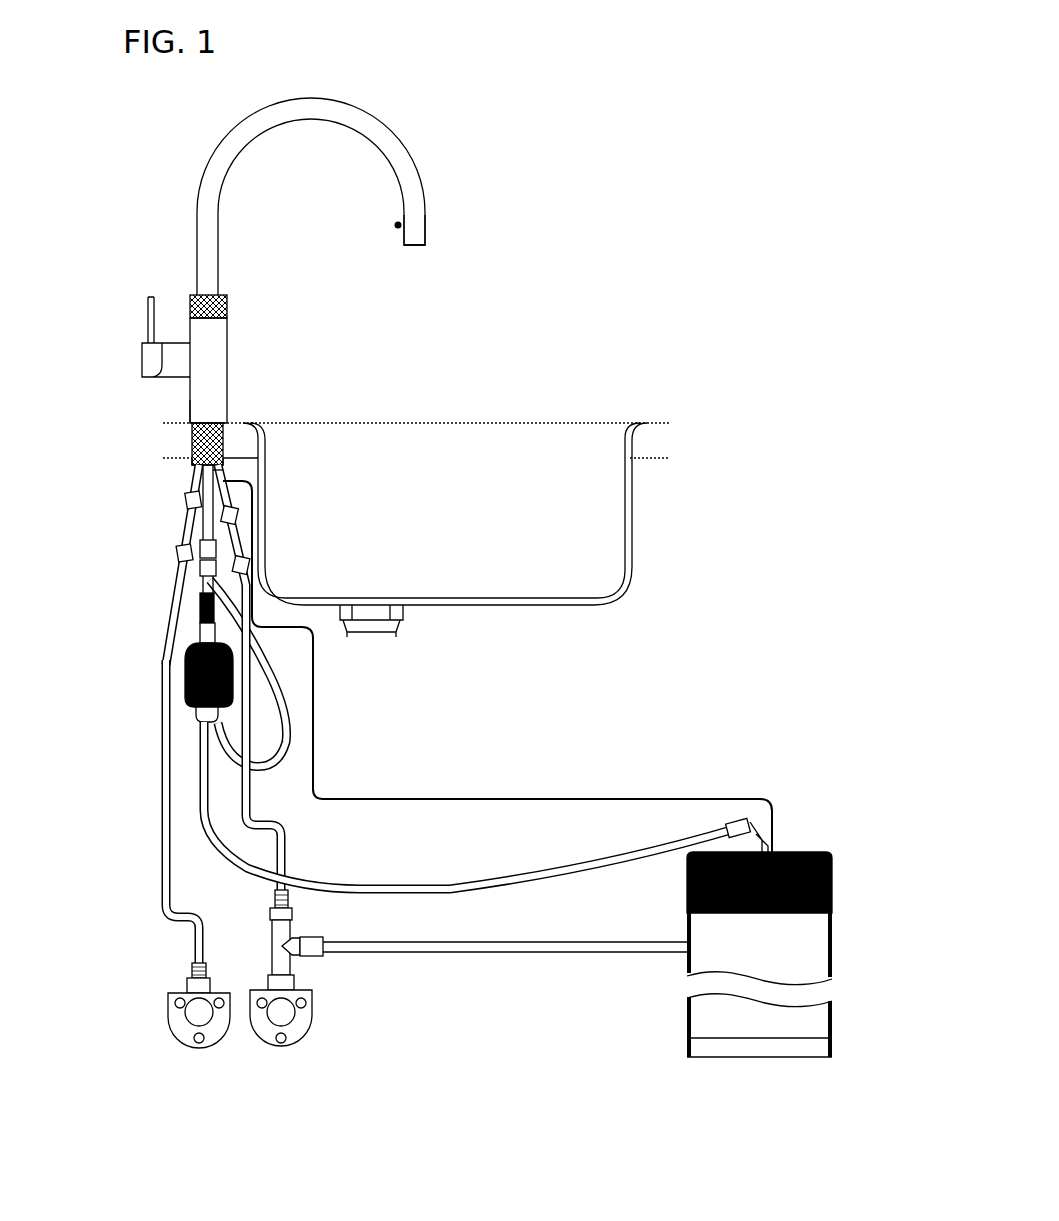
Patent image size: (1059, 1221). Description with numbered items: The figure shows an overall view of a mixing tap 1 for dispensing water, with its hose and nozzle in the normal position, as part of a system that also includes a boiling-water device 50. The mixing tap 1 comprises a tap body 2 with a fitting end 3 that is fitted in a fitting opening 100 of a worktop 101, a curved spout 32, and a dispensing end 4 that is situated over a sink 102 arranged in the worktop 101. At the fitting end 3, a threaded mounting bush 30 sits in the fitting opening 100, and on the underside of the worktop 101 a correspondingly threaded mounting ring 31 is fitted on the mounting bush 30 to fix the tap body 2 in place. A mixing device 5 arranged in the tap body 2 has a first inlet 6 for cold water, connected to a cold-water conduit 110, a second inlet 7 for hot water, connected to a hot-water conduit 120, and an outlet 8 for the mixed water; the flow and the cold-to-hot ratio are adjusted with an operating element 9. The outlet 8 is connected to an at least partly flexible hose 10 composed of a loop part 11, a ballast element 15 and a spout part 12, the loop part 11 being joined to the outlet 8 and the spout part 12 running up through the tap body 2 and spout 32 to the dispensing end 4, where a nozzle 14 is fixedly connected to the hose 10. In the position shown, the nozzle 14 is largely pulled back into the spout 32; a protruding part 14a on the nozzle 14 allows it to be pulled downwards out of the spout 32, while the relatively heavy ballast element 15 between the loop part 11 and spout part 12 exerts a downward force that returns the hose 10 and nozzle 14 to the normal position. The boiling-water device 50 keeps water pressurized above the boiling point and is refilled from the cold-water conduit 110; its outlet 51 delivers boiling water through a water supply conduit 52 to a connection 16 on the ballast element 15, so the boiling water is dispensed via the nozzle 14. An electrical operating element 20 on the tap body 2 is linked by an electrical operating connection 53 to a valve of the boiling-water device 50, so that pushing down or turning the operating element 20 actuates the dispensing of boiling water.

The mixing tap 1 is at (420, 96).
The tap body 2 is at (218, 352).
The fitting end 3 is at (172, 416).
The dispensing end 4 is at (442, 213).
The mixing device 5 is at (168, 321).
The first inlet 6 is at (223, 482).
The second inlet 7 is at (195, 477).
The outlet 8 is at (210, 515).
The operating element 9 is at (147, 327).
The hose 10 is at (168, 659).
The loop part 11 is at (283, 698).
The spout part 12 is at (202, 607).
The nozzle 14 is at (411, 246).
The protruding part 14a is at (395, 225).
The ballast element 15 is at (193, 700).
The connection 16 is at (197, 718).
The electrical operating element 20 is at (215, 296).
The mounting bush 30 is at (213, 433).
The mounting ring 31 is at (190, 465).
The spout 32 is at (222, 153).
The boiling-water device 50 is at (795, 850).
The outlet 51 is at (750, 825).
The water supply conduit 52 is at (205, 835).
The electrical operating connection 53 is at (548, 798).
The fitting opening 100 is at (192, 432).
The worktop 101 is at (238, 435).
The sink 102 is at (628, 532).
The cold-water conduit 110 is at (290, 963).
The hot-water conduit 120 is at (195, 933).